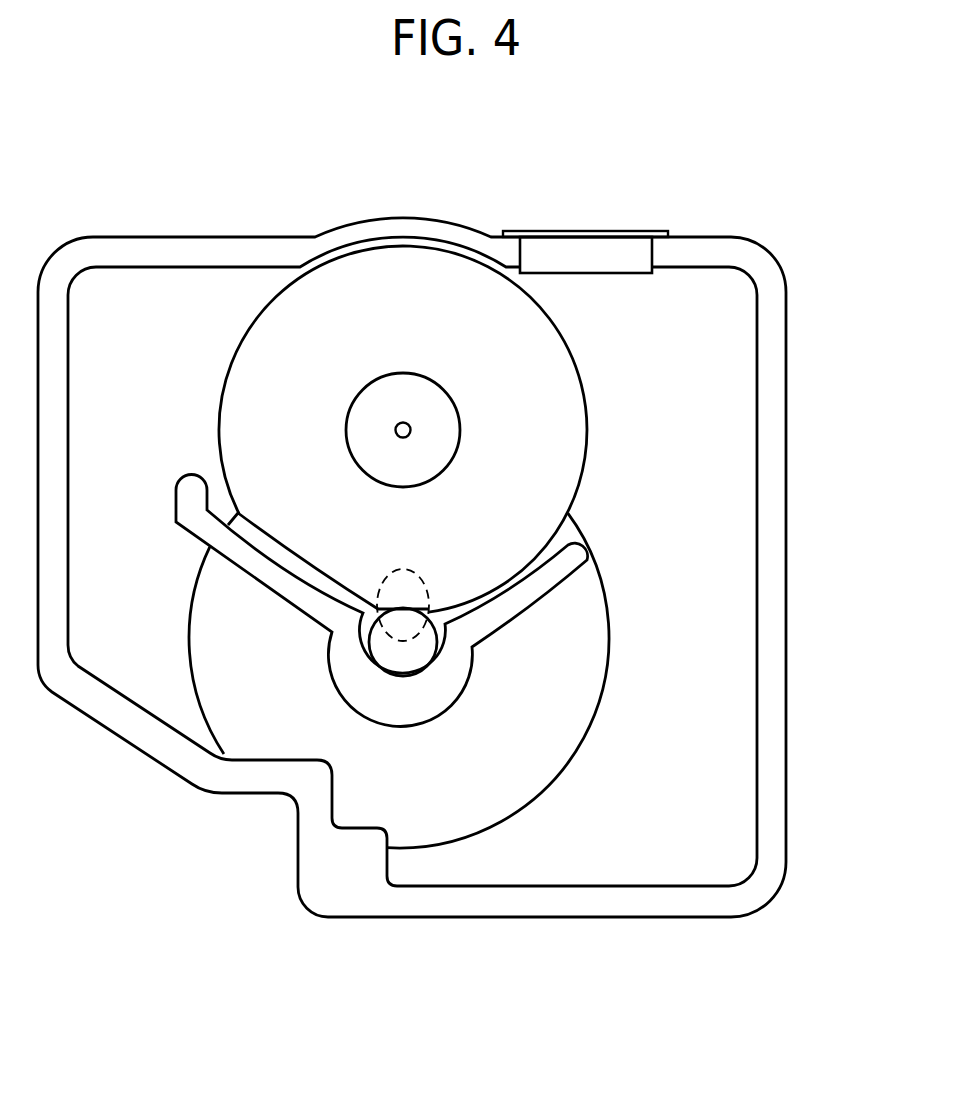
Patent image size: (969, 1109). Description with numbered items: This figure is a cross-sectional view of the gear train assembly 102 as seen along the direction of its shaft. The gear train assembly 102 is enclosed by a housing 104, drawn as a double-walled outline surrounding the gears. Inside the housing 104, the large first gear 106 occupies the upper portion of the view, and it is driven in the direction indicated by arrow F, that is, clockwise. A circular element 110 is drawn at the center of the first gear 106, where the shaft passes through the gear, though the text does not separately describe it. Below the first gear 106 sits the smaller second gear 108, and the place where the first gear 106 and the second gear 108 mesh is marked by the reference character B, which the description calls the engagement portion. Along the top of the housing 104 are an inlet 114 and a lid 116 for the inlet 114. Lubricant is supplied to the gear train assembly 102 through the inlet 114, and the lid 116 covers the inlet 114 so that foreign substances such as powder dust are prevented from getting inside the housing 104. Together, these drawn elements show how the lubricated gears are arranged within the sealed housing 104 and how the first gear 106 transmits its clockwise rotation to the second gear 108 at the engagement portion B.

The gear train assembly 102 is at (814, 281).
The housing 104 is at (773, 528).
The first gear 106 is at (573, 420).
The second gear 108 is at (422, 658).
The hub / shaft 110 is at (388, 384).
The inlet 114 is at (618, 263).
The lid 116 is at (605, 235).
The engagement portion B is at (428, 582).
The arrow indicating drive direction F is at (433, 523).